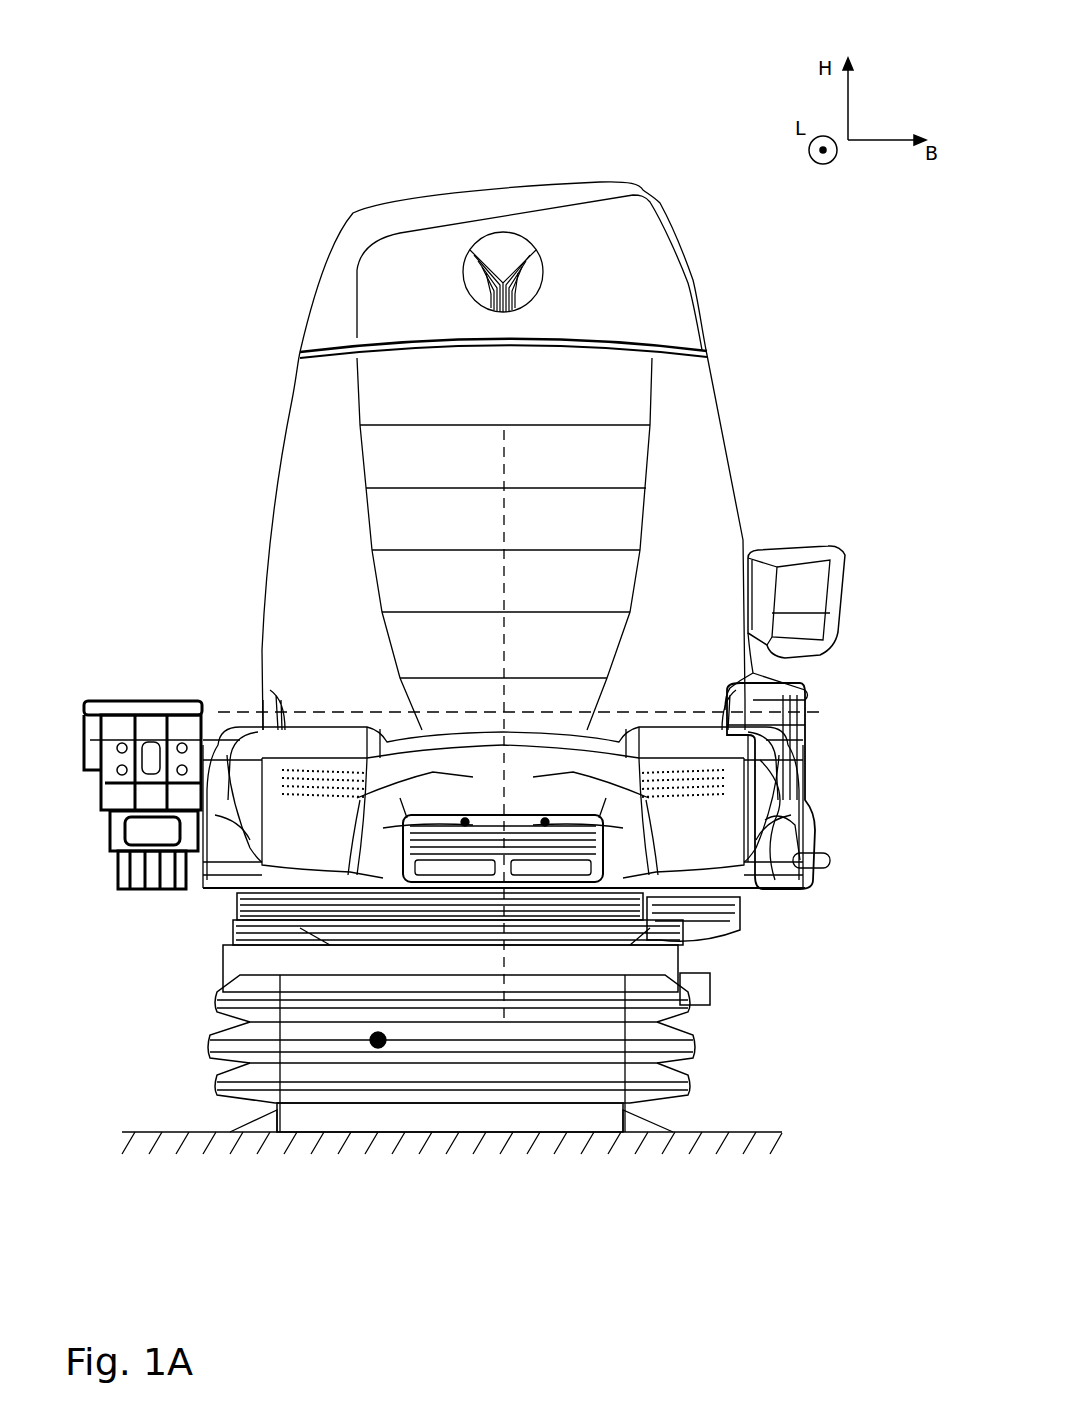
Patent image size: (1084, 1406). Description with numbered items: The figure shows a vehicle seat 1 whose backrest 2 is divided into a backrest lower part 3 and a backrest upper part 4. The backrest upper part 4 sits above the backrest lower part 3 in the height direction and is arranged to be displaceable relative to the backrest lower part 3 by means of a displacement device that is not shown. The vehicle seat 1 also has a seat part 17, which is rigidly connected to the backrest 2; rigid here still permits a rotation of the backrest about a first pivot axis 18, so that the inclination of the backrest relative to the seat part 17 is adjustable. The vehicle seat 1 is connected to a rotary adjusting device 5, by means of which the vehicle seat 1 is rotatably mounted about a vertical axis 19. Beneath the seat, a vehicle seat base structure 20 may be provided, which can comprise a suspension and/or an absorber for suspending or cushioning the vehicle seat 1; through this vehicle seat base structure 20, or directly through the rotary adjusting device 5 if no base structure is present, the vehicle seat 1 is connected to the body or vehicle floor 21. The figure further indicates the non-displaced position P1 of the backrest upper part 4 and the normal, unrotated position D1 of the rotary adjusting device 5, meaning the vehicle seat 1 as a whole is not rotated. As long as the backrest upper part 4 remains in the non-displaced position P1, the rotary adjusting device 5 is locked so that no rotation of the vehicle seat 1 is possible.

The vehicle seat 1 is at (719, 60).
The backrest 2 is at (158, 294).
The backrest lower part 3 is at (312, 438).
The backrest upper part 4 is at (360, 228).
The rotary adjusting device 5 is at (725, 925).
The seat part 17 is at (735, 858).
The first pivot axis 18 is at (240, 712).
The vertical axis 19 is at (506, 518).
The vehicle seat base structure 20 is at (135, 1006).
The vehicle floor 21 is at (748, 1132).
The non-displaced position P1 is at (633, 46).
The normal position D1 is at (679, 46).